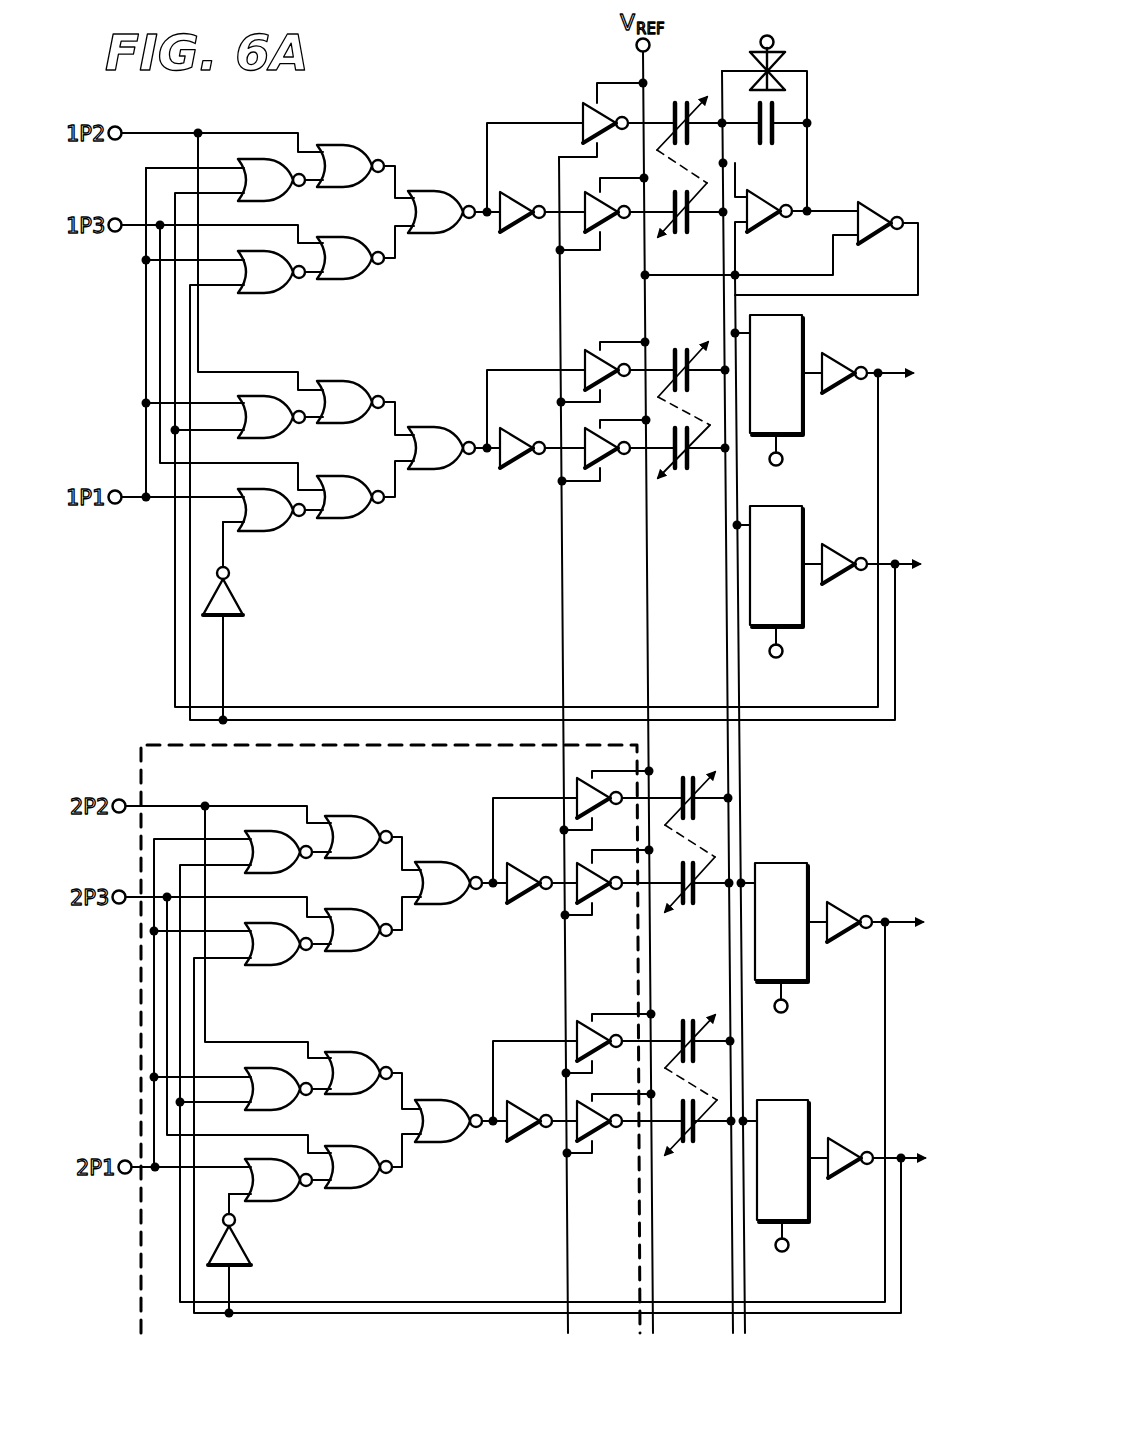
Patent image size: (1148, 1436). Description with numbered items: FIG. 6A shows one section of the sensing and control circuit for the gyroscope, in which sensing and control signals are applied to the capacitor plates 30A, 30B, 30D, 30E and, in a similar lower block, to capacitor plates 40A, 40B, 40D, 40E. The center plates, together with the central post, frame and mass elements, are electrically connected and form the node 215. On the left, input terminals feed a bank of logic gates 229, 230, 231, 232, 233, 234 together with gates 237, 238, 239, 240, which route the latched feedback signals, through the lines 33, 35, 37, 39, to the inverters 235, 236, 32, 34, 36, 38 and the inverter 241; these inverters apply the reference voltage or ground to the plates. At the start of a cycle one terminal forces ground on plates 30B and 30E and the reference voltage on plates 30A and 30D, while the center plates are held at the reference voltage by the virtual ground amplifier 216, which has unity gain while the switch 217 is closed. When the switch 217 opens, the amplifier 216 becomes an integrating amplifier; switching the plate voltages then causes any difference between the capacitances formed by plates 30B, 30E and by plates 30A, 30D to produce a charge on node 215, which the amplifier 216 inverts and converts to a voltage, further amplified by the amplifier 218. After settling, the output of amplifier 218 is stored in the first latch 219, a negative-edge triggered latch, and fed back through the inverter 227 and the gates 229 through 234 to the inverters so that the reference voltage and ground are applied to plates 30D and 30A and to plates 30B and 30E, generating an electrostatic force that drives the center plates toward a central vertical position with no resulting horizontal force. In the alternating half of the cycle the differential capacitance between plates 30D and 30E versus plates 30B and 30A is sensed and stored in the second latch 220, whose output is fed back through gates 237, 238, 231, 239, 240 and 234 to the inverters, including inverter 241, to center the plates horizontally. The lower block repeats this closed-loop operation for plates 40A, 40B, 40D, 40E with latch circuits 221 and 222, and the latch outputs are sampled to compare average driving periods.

The capacitor plate 30A is at (682, 351).
The capacitor plate 30B is at (686, 232).
The capacitor plate 30D is at (682, 104).
The capacitor plate 30E is at (686, 470).
The inverter 32 is at (588, 348).
The control line 33 is at (487, 385).
The inverter 34 is at (583, 118).
The control line 35 is at (487, 150).
The inverter 36 is at (608, 475).
The control line 37 is at (555, 435).
The inverter 38 is at (601, 235).
The control line 39 is at (555, 205).
The capacitor plate 40A is at (690, 1021).
The capacitor plate 40B is at (693, 905).
The capacitor plate 40D is at (690, 778).
The capacitor plate 40E is at (693, 1145).
The node 215 is at (745, 1195).
The virtual ground amplifier 216 is at (770, 185).
The switch 217 is at (785, 65).
The amplifier 218 is at (870, 212).
The first latch 219 is at (805, 418).
The second latch 220 is at (808, 610).
The latch circuit 221 is at (808, 968).
The latch circuit 222 is at (810, 1206).
The inverter 227 is at (838, 366).
The logic gate 229 is at (275, 431).
The logic gate 230 is at (325, 383).
The logic gate 231 is at (418, 432).
The logic gate 232 is at (275, 193).
The logic gate 233 is at (323, 150).
The logic gate 234 is at (418, 195).
The inverter 235 is at (520, 470).
The inverter 236 is at (520, 235).
The gate 237 is at (250, 530).
The gate 238 is at (350, 514).
The gate 239 is at (250, 292).
The gate 240 is at (350, 277).
The inverter 241 is at (243, 615).